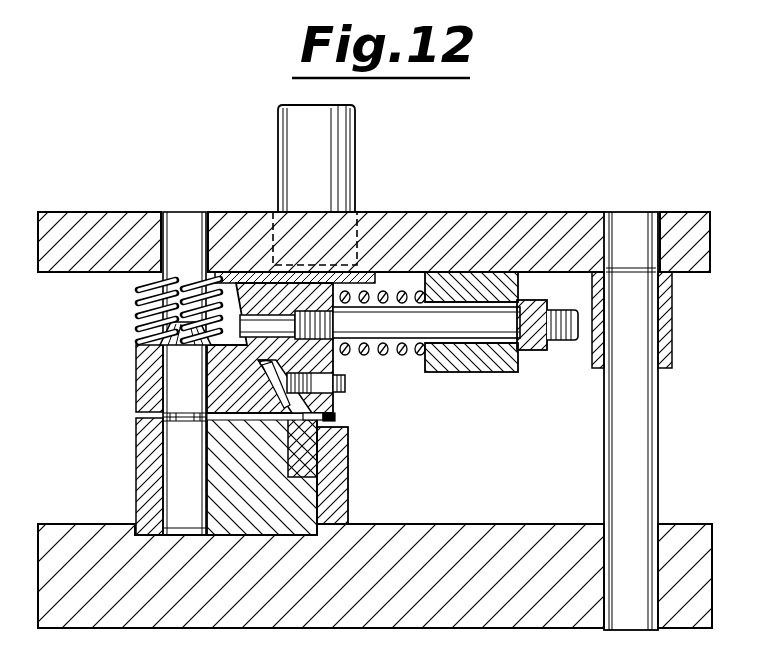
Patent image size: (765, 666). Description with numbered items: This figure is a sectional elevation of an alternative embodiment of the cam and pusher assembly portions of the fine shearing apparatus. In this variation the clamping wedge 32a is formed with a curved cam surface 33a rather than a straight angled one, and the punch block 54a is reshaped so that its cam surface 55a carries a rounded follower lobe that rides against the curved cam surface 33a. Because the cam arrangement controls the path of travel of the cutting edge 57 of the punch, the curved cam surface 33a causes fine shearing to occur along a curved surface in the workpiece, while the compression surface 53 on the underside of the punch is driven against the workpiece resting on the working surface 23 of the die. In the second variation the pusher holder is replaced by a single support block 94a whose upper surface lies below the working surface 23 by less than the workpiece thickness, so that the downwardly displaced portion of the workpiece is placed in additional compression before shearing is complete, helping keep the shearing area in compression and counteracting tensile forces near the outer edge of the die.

The punch block 54a is at (268, 340).
The clamping wedge 32a is at (227, 377).
The curved cam surface 33a is at (267, 375).
The cam surface 55a is at (332, 352).
The compression surface 53 is at (332, 418).
The working surface 23 is at (325, 416).
The cutting edge 57 is at (310, 422).
The support block 94a is at (336, 482).